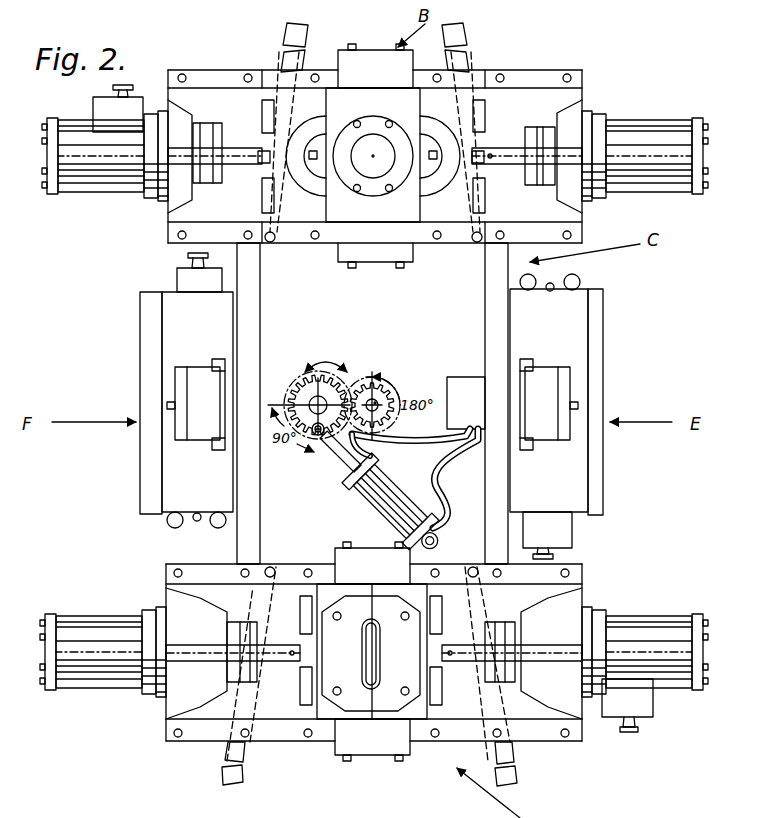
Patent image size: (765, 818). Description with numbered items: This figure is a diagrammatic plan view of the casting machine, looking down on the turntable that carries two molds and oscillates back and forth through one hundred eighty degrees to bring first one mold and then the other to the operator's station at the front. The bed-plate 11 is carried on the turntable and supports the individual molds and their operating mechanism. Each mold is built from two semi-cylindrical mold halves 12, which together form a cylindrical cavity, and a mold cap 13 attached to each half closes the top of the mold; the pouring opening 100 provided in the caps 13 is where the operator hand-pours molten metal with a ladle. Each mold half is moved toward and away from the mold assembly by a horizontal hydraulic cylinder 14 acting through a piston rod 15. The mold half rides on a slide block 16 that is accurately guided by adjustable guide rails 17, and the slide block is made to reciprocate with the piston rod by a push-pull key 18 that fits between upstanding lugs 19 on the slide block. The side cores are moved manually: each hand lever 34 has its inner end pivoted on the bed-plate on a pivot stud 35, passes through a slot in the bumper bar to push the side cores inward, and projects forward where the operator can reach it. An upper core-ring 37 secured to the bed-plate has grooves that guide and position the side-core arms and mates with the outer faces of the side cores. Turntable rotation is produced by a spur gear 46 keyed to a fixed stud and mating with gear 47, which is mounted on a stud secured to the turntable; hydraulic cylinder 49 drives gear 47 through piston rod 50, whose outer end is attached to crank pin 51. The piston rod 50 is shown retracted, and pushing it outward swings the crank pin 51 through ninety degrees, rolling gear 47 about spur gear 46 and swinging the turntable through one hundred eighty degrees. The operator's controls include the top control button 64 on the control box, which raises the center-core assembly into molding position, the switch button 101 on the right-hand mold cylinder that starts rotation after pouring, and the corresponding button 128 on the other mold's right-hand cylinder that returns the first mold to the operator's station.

The bed-plate 11 is at (556, 607).
The mold half 12 is at (437, 190).
The mold cap 13 is at (371, 653).
The horizontal hydraulic cylinder 14 is at (90, 634).
The piston rod 15 is at (186, 656).
The slide block 16 is at (509, 98).
The adjustable guide rails 17 is at (522, 75).
The push-pull key 18 is at (542, 186).
The upstanding lugs 19 is at (545, 128).
The hand lever 34 is at (244, 778).
The pivot stud 35 is at (289, 572).
The upper core-ring 37 is at (370, 122).
The spur gear 46 is at (372, 383).
The gear 47 is at (308, 385).
The hydraulic cylinder 49 is at (372, 505).
The piston rod 50 is at (337, 466).
The crank pin 51 is at (312, 438).
The control button 64 is at (185, 258).
The pouring opening 100 is at (370, 653).
The switch button 101 is at (632, 731).
The button 128 is at (125, 86).